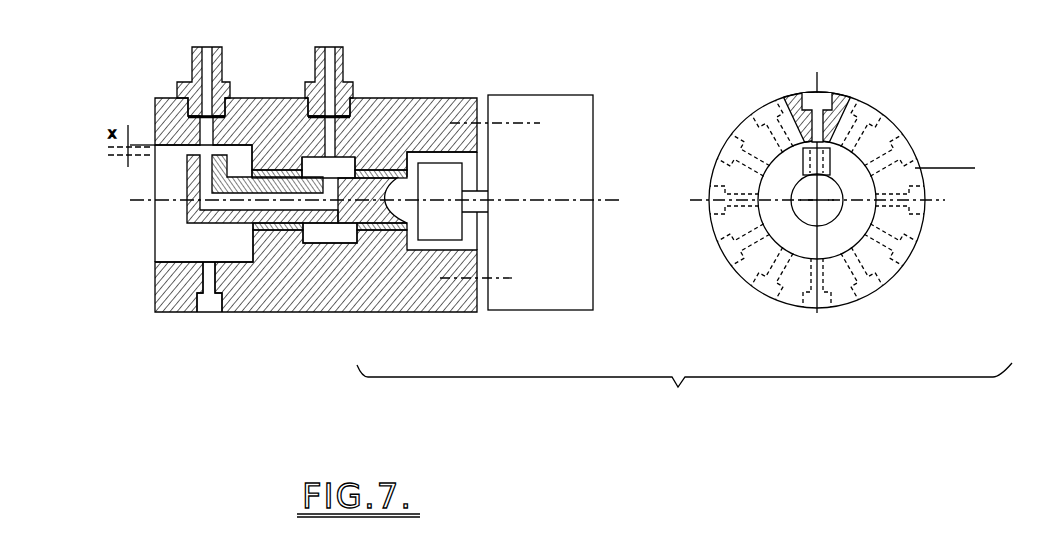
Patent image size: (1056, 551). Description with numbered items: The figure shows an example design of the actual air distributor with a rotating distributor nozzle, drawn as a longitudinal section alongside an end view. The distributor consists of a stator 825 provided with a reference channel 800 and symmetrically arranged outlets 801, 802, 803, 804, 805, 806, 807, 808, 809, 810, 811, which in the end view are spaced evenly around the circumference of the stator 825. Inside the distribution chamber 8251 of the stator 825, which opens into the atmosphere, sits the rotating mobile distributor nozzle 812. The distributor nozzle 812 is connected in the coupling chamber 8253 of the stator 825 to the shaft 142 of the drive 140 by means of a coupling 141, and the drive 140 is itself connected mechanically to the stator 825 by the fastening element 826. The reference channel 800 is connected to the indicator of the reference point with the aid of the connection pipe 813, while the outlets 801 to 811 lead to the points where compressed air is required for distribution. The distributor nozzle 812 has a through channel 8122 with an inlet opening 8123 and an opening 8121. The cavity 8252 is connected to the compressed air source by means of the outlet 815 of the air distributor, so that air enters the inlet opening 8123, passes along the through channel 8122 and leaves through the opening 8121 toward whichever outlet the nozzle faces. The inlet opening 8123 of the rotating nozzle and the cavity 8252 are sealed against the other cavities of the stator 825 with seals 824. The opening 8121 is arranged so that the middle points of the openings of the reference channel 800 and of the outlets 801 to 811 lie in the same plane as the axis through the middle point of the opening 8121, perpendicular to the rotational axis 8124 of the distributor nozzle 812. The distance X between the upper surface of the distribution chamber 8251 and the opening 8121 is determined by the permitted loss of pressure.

The reference channel 800 is at (198, 130).
The outlet 801 is at (871, 118).
The outlet 802 is at (908, 155).
The outlet 803 is at (928, 200).
The outlet 804 is at (908, 242).
The outlet 805 is at (878, 276).
The outlet 806 is at (502, 297).
The outlet 807 is at (761, 277).
The outlet 808 is at (723, 243).
The outlet 809 is at (707, 200).
The outlet 810 is at (727, 158).
The outlet 811 is at (768, 118).
The distributor nozzle 812 is at (187, 212).
The connection pipe 813 is at (187, 82).
The outlet of the air distributor 815 is at (344, 81).
The seals 824 is at (365, 231).
The stator 825 is at (638, 248).
The fastening element 826 is at (490, 189).
The opening 8121 is at (188, 158).
The through channel 8122 is at (262, 224).
The inlet opening 8123 is at (447, 312).
The rotational axis 8124 is at (560, 198).
The distribution chamber 8251 is at (177, 248).
The cavity 8252 is at (317, 163).
The coupling chamber 8253 is at (418, 156).
The drive 140 is at (540, 202).
The coupling 141 is at (440, 201).
The shaft 142 is at (477, 200).